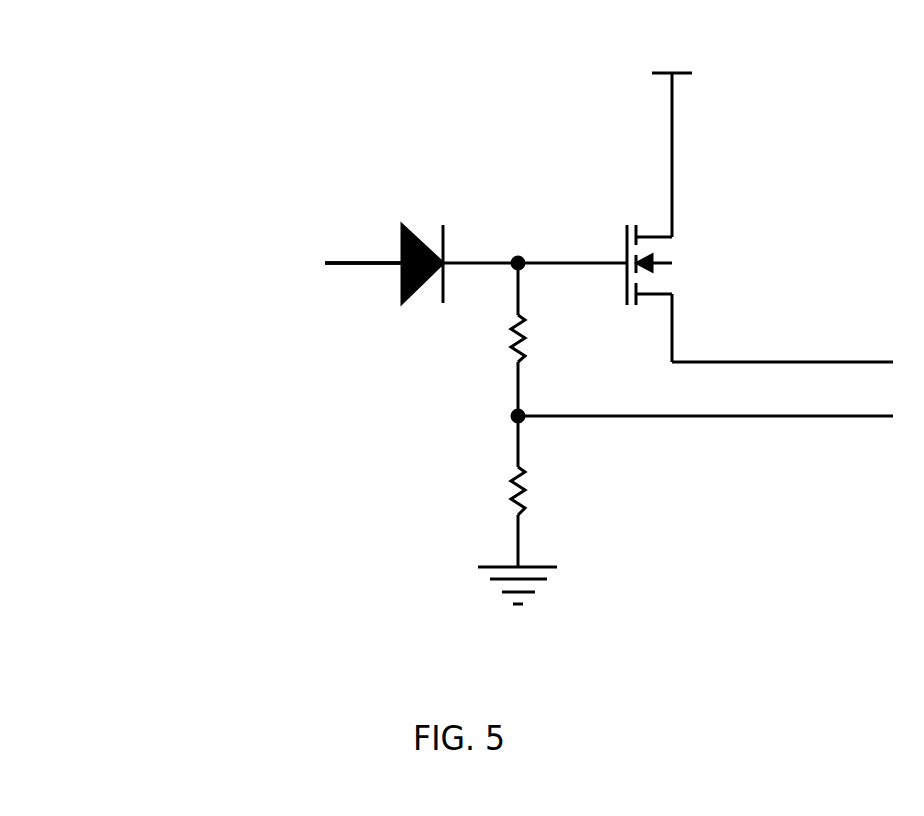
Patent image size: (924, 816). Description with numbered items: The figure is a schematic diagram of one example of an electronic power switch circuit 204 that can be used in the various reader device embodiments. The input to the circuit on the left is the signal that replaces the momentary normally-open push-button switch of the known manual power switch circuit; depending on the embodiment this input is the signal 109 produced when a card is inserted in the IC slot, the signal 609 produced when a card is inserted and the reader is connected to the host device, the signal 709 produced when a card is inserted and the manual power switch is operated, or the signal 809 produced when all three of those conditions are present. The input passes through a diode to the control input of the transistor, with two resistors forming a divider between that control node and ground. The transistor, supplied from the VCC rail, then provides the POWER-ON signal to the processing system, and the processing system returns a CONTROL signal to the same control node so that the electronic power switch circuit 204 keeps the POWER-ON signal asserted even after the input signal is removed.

The electronic power switch circuit 204 is at (813, 639).
The signal 109 is at (291, 235).
The signal 609 is at (291, 249).
The signal 709 is at (291, 278).
The signal 809 is at (291, 292).